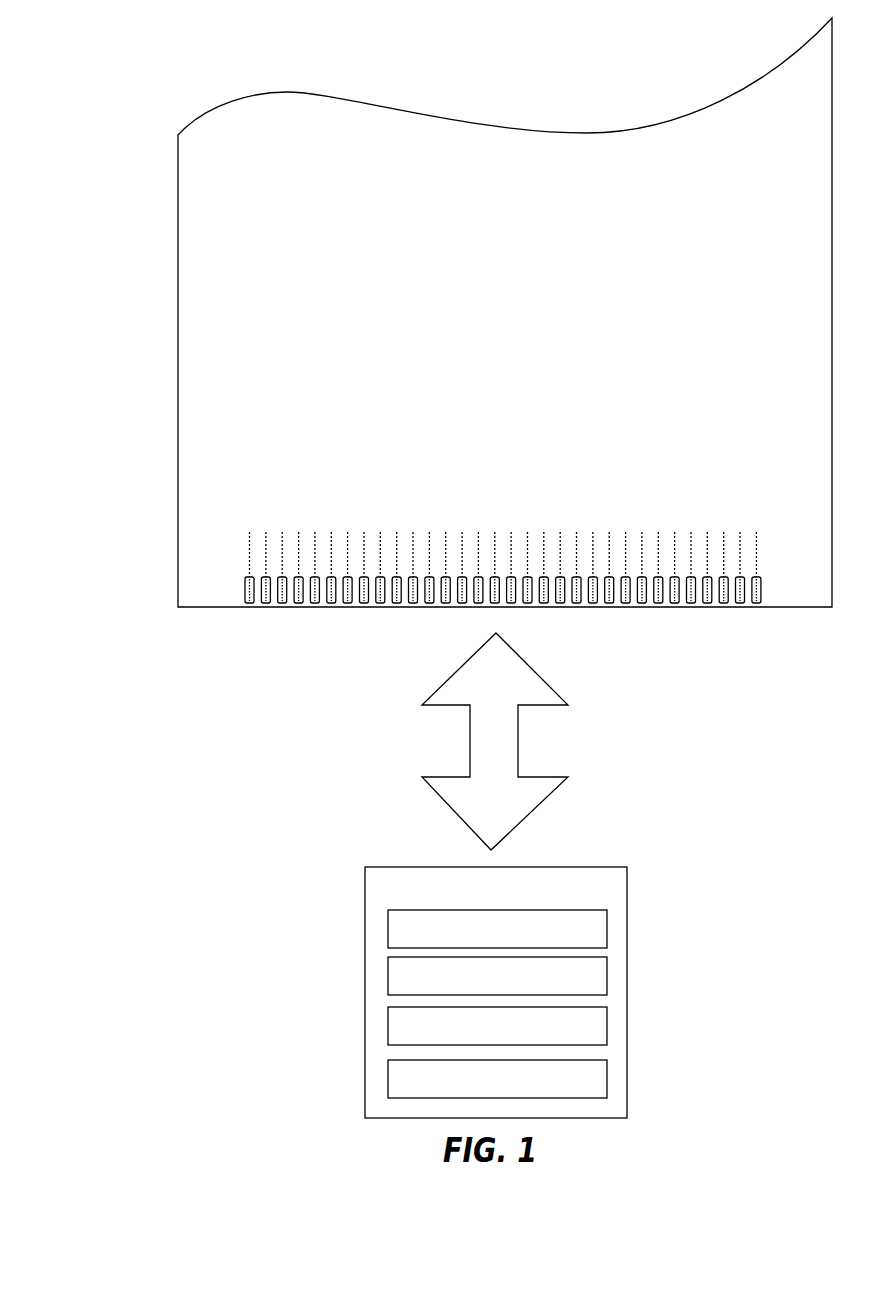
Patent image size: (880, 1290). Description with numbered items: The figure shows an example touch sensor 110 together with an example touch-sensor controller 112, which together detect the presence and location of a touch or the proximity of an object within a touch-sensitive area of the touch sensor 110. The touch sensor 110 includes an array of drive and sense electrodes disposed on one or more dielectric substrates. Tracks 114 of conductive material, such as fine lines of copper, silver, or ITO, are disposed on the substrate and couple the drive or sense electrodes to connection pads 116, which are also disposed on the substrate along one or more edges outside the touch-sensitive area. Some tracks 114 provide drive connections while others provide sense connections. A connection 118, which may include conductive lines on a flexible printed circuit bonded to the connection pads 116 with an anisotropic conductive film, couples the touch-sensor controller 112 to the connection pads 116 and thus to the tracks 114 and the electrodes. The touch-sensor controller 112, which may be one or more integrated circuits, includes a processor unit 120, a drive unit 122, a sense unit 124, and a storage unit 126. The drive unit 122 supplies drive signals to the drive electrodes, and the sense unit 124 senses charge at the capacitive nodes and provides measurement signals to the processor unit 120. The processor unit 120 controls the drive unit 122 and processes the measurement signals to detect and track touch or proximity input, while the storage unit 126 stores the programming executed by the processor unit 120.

The touch sensor 110 is at (230, 236).
The touch-sensor controller 112 is at (412, 992).
The tracks 114 is at (243, 560).
The connection pads 116 is at (240, 583).
The connection 118 is at (467, 773).
The processor unit 120 is at (497, 929).
The drive unit 122 is at (497, 976).
The sense unit 124 is at (497, 1026).
The storage unit 126 is at (497, 1079).